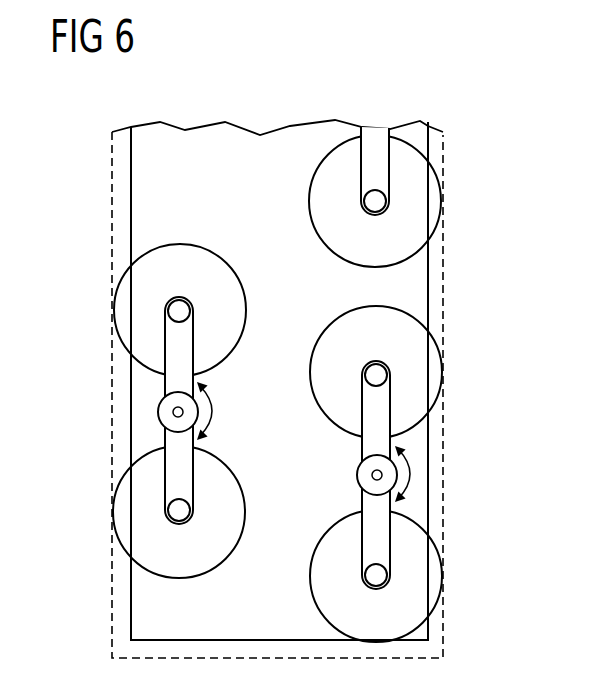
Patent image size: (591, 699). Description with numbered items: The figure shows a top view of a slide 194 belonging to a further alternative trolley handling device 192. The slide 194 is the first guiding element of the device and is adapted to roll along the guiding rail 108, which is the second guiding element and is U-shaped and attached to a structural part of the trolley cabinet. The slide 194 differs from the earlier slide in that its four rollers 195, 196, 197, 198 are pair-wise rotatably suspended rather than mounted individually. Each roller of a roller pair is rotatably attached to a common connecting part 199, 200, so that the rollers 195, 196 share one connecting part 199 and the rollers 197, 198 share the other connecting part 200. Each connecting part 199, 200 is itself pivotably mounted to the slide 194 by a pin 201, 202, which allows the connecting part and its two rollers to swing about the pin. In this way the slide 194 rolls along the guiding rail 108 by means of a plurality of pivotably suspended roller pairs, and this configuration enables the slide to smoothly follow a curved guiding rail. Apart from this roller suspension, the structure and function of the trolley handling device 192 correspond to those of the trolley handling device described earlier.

The trolley handling device 192 is at (356, 78).
The guiding rail 108 is at (429, 263).
The slide 194 is at (432, 143).
The roller 195 is at (236, 312).
The roller 196 is at (228, 530).
The roller 197 is at (318, 397).
The roller 198 is at (318, 592).
The connecting part 199 is at (173, 380).
The connecting part 200 is at (368, 507).
The pin 201 is at (166, 412).
The pin 202 is at (357, 469).